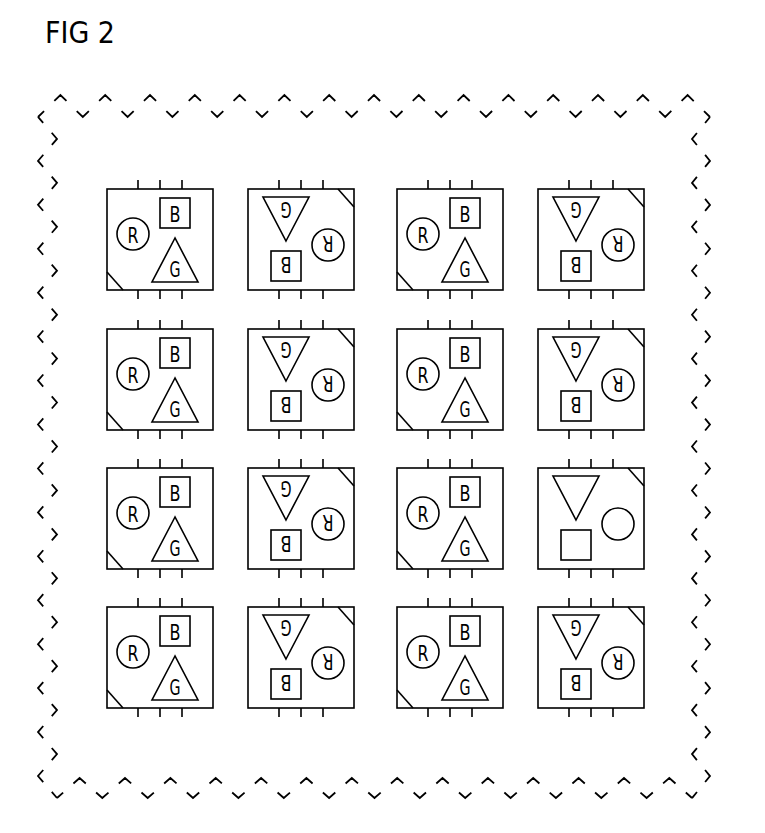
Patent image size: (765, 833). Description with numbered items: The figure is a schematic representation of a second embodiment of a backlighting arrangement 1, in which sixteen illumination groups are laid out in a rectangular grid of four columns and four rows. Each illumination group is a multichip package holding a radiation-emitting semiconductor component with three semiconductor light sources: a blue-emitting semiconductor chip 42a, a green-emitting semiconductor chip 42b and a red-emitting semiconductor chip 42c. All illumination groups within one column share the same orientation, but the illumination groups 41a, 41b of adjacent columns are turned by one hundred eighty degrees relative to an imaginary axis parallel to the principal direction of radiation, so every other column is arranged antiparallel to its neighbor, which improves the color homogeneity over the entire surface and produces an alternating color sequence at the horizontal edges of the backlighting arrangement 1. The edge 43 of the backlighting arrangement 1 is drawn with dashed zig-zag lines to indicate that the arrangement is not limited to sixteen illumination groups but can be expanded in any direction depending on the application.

The backlighting arrangement 1 is at (669, 79).
The edge 43 is at (388, 108).
The illumination group 41a is at (431, 720).
The illumination group 41b is at (600, 720).
The blue-emitting semiconductor chip 42a is at (558, 543).
The green-emitting semiconductor chip 42b is at (557, 498).
The red-emitting semiconductor chip 42c is at (628, 515).